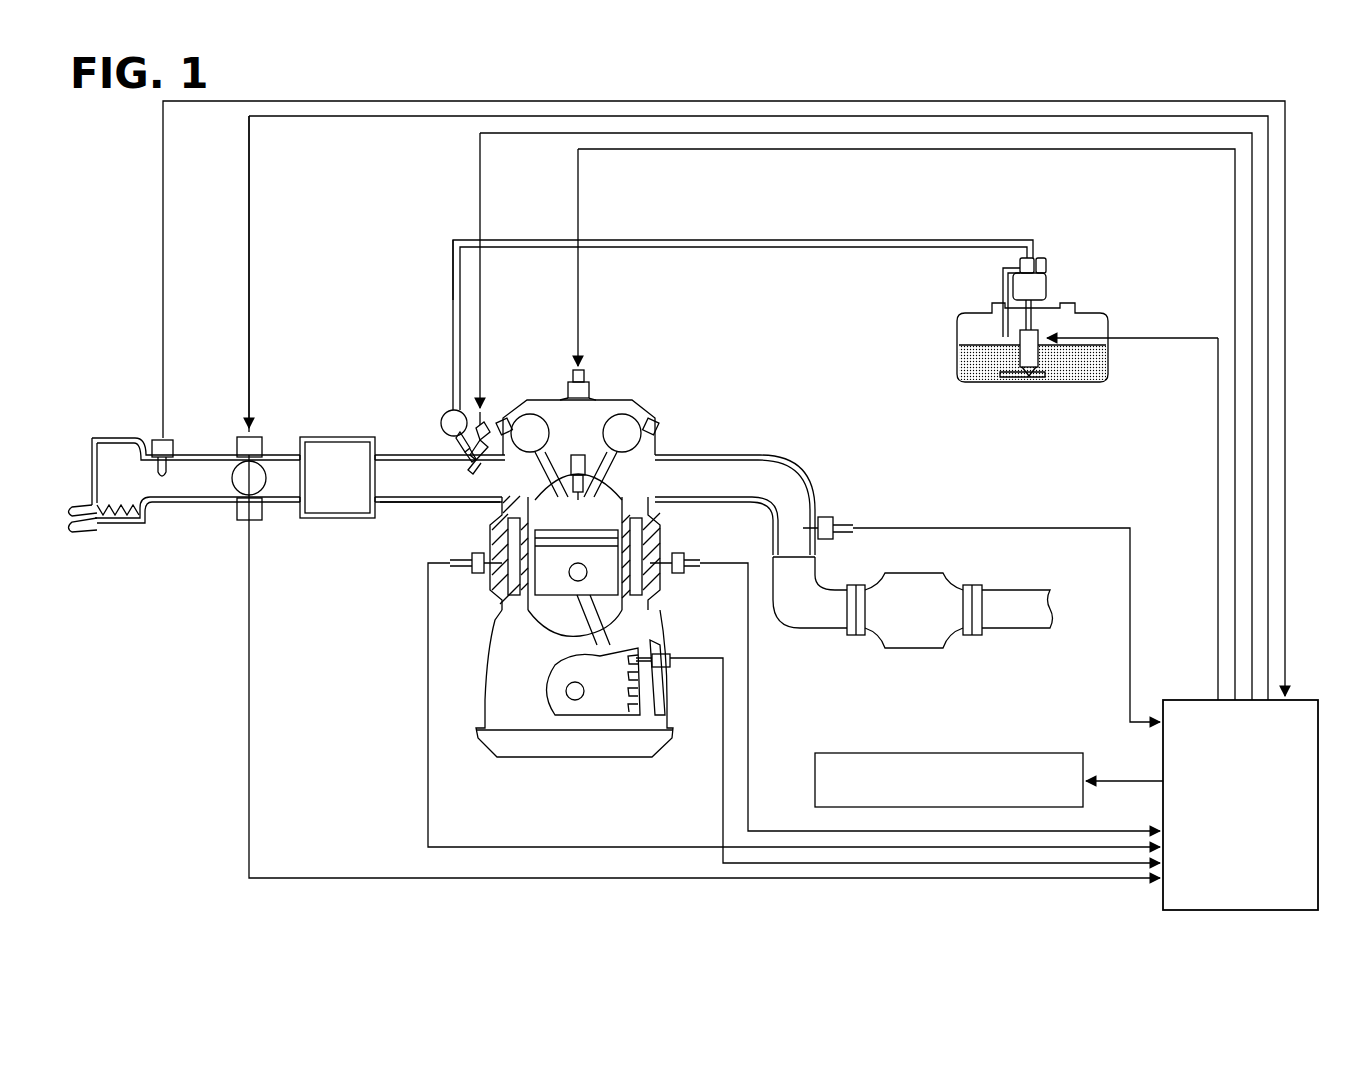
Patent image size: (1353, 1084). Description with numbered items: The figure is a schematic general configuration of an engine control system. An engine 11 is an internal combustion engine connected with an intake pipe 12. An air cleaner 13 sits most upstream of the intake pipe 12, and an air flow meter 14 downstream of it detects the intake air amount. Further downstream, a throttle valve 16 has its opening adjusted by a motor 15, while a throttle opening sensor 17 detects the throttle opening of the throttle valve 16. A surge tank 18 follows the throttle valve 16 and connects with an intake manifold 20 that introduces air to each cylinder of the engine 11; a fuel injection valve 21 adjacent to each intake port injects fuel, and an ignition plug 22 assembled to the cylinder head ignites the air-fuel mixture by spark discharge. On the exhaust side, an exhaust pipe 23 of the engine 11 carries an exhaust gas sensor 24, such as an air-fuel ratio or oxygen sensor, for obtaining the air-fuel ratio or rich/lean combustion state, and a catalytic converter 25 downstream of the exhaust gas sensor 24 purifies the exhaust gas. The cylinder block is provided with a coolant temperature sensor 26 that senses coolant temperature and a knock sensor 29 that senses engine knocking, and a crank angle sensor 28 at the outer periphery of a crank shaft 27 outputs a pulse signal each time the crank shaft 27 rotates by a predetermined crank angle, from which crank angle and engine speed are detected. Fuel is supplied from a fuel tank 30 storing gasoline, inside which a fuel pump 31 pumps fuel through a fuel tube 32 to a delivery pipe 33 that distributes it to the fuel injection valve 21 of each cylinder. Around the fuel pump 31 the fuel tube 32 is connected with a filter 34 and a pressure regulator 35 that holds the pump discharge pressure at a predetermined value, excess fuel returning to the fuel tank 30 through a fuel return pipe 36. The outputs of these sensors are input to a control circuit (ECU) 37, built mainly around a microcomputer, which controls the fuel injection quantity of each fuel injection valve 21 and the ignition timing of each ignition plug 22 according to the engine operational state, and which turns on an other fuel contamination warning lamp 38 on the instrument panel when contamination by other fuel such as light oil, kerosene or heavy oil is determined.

The engine 11 is at (625, 398).
The intake pipe 12 is at (200, 453).
The air cleaner 13 is at (112, 530).
The air flow meter 14 is at (152, 440).
The motor 15 is at (240, 434).
The throttle valve 16 is at (238, 480).
The throttle opening sensor 17 is at (258, 522).
The surge tank 18 is at (338, 520).
The intake manifold 20 is at (418, 504).
The fuel injection valve 21 is at (490, 420).
The ignition plug 22 is at (592, 440).
The exhaust pipe 23 is at (770, 455).
The exhaust gas sensor 24 is at (832, 516).
The catalytic converter 25 is at (925, 575).
The coolant temperature sensor 26 is at (478, 575).
The crank shaft 27 is at (575, 700).
The crank angle sensor 28 is at (670, 656).
The knock sensor 29 is at (695, 556).
The fuel tank 30 is at (1108, 375).
The fuel pump 31 is at (1035, 370).
The fuel tube 32 is at (785, 250).
The delivery pipe 33 is at (441, 420).
The filter 34 is at (1048, 290).
The pressure regulator 35 is at (1047, 266).
The fuel return pipe 36 is at (1000, 325).
The control circuit (ECU) 37 is at (1200, 698).
The other fuel contamination warning lamp 38 is at (850, 752).